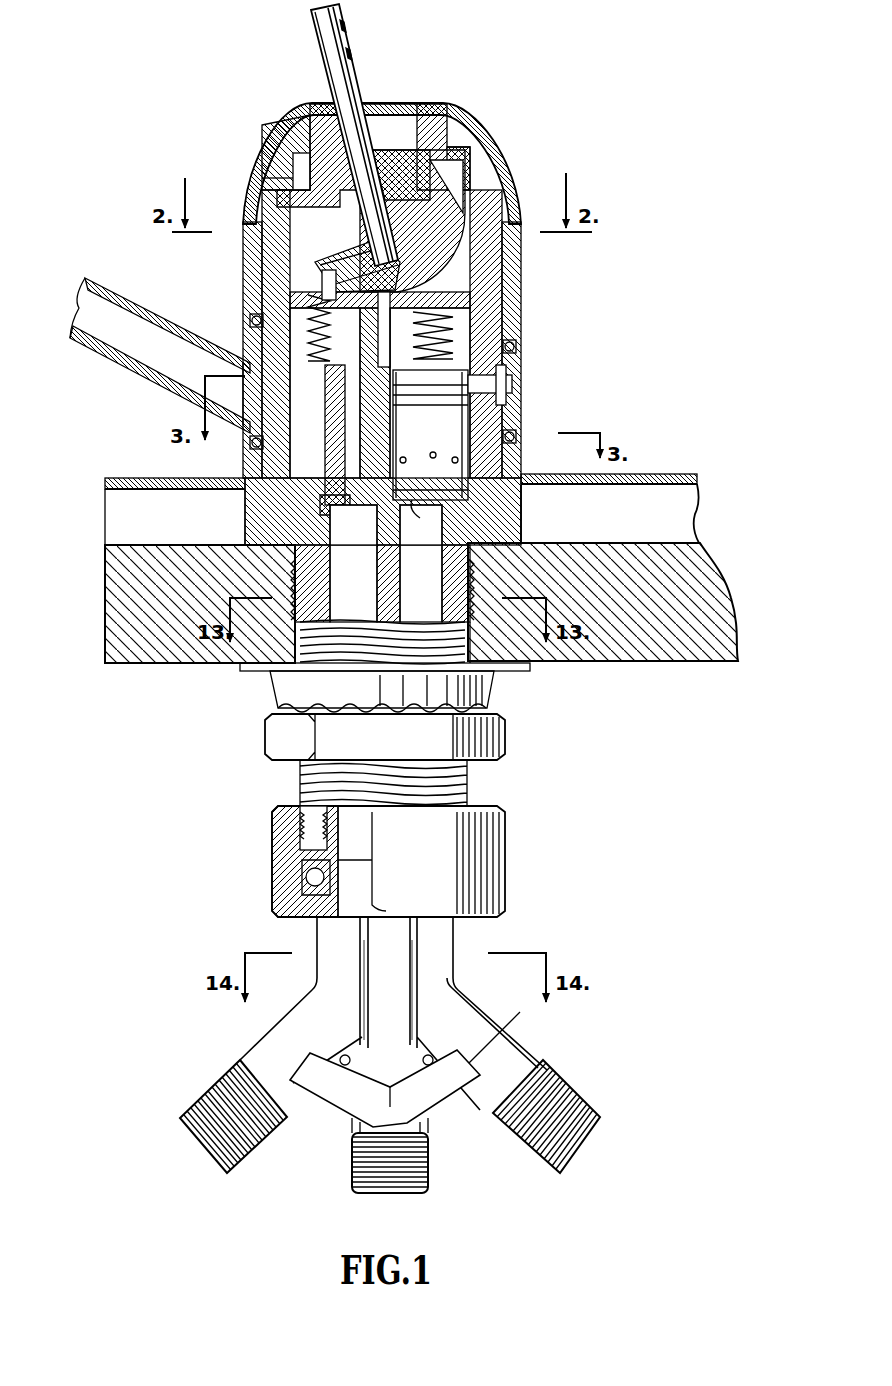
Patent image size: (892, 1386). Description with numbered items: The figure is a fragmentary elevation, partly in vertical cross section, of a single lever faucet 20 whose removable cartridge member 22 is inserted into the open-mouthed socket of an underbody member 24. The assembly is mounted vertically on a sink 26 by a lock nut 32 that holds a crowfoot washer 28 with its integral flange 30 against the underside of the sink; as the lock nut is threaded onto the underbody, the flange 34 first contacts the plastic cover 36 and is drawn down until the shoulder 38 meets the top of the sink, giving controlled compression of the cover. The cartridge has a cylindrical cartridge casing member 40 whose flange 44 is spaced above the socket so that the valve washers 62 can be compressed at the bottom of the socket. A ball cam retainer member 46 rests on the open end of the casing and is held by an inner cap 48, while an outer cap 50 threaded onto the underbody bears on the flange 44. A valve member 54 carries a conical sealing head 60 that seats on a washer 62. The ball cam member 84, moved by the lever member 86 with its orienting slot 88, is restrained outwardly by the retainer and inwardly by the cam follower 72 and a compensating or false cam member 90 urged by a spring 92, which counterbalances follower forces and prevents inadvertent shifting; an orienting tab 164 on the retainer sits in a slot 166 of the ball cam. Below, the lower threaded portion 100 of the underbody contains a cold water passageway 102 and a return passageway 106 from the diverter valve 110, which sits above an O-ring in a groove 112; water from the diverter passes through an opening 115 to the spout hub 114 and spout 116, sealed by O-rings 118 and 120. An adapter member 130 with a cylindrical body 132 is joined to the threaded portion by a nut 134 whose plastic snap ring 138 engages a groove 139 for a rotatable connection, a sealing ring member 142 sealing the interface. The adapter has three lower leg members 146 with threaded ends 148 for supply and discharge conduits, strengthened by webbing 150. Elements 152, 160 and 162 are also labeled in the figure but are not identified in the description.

The single lever faucet 20 is at (403, 350).
The removable cartridge member 22 is at (218, 153).
The underbody member 24 is at (244, 517).
The sink 26 is at (608, 544).
The crowfoot washer 28 is at (494, 700).
The integral flange 30 is at (516, 676).
The lock nut 32 is at (272, 744).
The flange 34 is at (520, 478).
The plastic cover 36 is at (162, 478).
The shoulder 38 is at (506, 524).
The cartridge casing member 40 is at (252, 446).
The flange 44 is at (243, 280).
The ball cam retainer member 46 is at (330, 104).
The inner cap 48 is at (286, 165).
The outer cap 50 is at (470, 126).
The valve member 54 is at (266, 244).
The conical sealing head 60 is at (342, 516).
The valve washers 62 is at (282, 506).
The cam follower 72 is at (260, 276).
The ball cam member 84 is at (383, 150).
The lever member 86 is at (330, 135).
The slot 88 is at (346, 46).
The compensating or false cam member 90 is at (358, 266).
The spring 92 is at (498, 320).
The lower threaded portion 100 is at (470, 788).
The passageway 102 is at (372, 590).
The passageway 106 is at (444, 590).
The diverter valve 110 is at (458, 484).
The groove 112 is at (426, 530).
The spout hub 114 is at (516, 394).
The opening 115 is at (508, 376).
The spout 116 is at (126, 306).
The O-ring 118 is at (512, 346).
The O-ring 120 is at (514, 442).
The adapter member 130 is at (410, 861).
The cylindrical body 132 is at (442, 944).
The nut 134 is at (494, 832).
The plastic snap ring 138 is at (302, 879).
The groove 139 is at (354, 875).
The sealing ring member 142 is at (300, 834).
The lower leg members 146 is at (266, 1048).
The threaded ends 148 is at (210, 1084).
The webbing 150 is at (368, 1086).
The insert 152 is at (422, 106).
The ball 160 is at (412, 221).
The socket 162 is at (396, 162).
The orienting tab 164 is at (294, 152).
The slot 166 is at (290, 186).